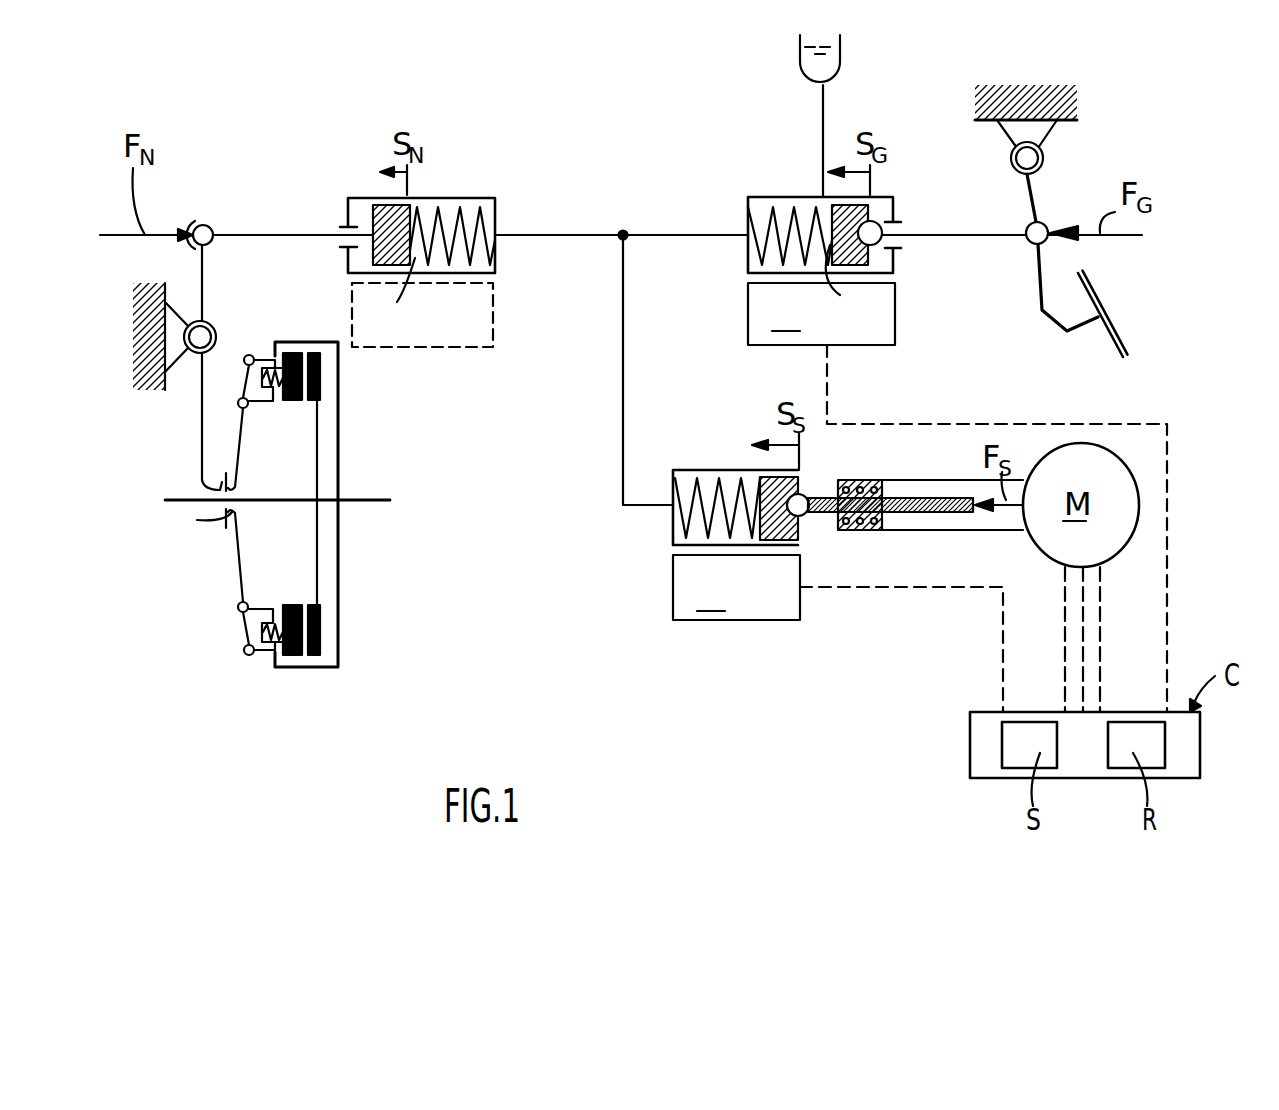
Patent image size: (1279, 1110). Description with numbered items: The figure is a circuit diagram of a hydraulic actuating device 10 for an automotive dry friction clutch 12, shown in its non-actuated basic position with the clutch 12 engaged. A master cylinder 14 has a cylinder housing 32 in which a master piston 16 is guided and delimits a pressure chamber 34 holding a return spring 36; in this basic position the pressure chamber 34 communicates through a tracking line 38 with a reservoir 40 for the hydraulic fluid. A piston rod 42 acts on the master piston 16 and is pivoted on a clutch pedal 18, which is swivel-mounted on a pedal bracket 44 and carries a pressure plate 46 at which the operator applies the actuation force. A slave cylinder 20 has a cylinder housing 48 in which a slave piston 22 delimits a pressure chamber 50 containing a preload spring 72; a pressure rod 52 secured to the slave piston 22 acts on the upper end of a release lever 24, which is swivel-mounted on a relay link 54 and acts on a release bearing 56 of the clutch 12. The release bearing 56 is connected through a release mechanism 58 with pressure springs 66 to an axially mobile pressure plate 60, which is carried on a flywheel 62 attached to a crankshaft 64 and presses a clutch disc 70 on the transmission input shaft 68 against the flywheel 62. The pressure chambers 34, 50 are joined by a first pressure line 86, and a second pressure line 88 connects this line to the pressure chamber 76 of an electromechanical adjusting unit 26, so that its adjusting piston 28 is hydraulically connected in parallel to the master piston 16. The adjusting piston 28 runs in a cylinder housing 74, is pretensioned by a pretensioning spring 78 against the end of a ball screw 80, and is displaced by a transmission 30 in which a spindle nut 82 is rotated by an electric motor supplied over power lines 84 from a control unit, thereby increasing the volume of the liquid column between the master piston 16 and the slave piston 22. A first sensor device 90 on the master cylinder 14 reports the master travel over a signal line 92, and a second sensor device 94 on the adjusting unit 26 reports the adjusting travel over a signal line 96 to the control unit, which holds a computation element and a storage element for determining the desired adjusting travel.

The hydraulic actuating device 10 is at (589, 152).
The clutch 12 is at (208, 573).
The master cylinder 14 is at (775, 182).
The master piston 16 is at (860, 203).
The clutch pedal 18 is at (1040, 280).
The slave cylinder 20 is at (369, 185).
The slave piston 22 is at (406, 222).
The release lever 24 is at (202, 418).
The electromechanical adjusting unit 26 is at (832, 553).
The adjusting piston 28 is at (806, 490).
The transmission 30 is at (872, 470).
The cylinder housing 32 is at (748, 212).
The pressure chamber 34 is at (760, 264).
The return spring 36 is at (806, 215).
The tracking line 38 is at (823, 107).
The reservoir 40 is at (840, 50).
The piston rod 42 is at (943, 230).
The pedal bracket 44 is at (1037, 132).
The pressure plate 46 is at (1110, 322).
The cylinder housing 48 is at (497, 204).
The pressure chamber 50 is at (470, 206).
The pressure rod 52 is at (262, 235).
The relay link 54 is at (202, 322).
The release bearing 56 is at (220, 520).
The release mechanism 58 is at (262, 441).
The pressure plate 60 is at (300, 353).
The flywheel 62 is at (313, 668).
The crankshaft 64 is at (382, 504).
The pressure springs 66 is at (318, 397).
The transmission input shaft 68 is at (265, 505).
The clutch disc 70 is at (302, 372).
The preload spring 72 is at (475, 247).
The cylinder housing 74 is at (700, 470).
The pressure chamber 76 is at (684, 534).
The pretensioning spring 78 is at (728, 490).
The ball screw 80 is at (945, 512).
The spindle nut 82 is at (868, 530).
The power lines 84 is at (1100, 678).
The first pressure line 86 is at (602, 235).
The second pressure line 88 is at (623, 365).
The first sensor device 90 is at (821, 295).
The signal line 92 is at (1012, 424).
The second sensor device 94 is at (450, 326).
The signal line 96 is at (1003, 632).